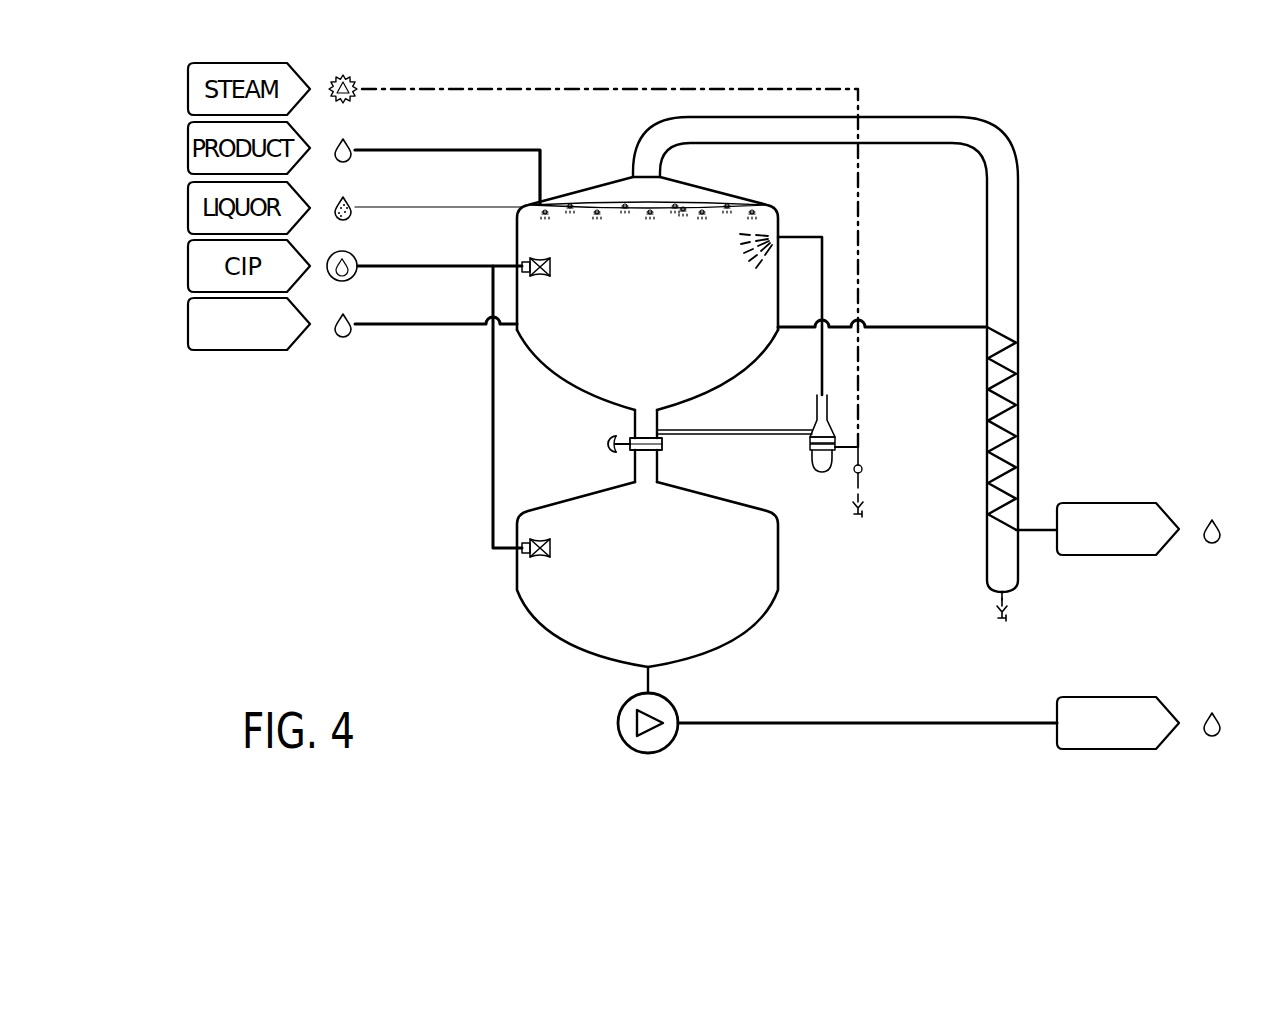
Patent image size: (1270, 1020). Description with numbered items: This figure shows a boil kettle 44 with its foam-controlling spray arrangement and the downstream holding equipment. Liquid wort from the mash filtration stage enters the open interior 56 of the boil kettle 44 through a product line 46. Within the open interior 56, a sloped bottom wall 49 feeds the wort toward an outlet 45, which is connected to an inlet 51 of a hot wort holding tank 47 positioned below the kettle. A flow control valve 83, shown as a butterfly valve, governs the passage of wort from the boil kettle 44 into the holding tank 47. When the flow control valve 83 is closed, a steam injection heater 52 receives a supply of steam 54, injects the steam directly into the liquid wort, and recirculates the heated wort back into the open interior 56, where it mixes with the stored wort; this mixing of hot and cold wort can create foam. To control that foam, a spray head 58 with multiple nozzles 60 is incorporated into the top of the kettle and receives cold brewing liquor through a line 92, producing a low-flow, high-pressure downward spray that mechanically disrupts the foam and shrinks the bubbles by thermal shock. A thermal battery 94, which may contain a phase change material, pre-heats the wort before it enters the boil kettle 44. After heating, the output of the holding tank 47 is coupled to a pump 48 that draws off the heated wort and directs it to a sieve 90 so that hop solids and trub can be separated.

The boil kettle 44 is at (552, 373).
The outlet 45 is at (646, 420).
The product line 46 is at (447, 150).
The hot wort holding tank 47 is at (763, 592).
The pump 48 is at (648, 753).
The sloped bottom wall 49 is at (608, 410).
The inlet 51 is at (647, 465).
The steam injection heater 52 is at (810, 448).
The supply of steam 54 is at (858, 255).
The open interior 56 is at (718, 370).
The spray head 58 is at (683, 207).
The nozzles 60 is at (597, 210).
The flow control valve 83 is at (612, 450).
The sieve 90 is at (1108, 750).
The line 92 is at (437, 207).
The thermal battery 94 is at (240, 350).